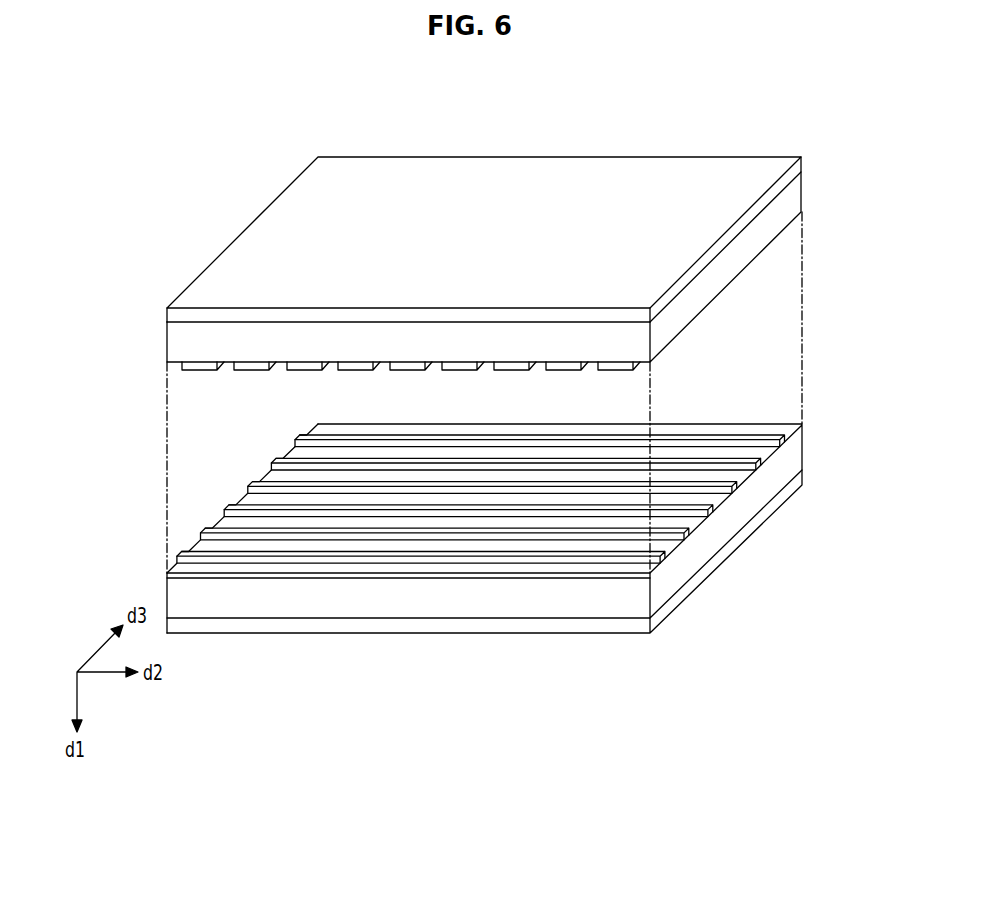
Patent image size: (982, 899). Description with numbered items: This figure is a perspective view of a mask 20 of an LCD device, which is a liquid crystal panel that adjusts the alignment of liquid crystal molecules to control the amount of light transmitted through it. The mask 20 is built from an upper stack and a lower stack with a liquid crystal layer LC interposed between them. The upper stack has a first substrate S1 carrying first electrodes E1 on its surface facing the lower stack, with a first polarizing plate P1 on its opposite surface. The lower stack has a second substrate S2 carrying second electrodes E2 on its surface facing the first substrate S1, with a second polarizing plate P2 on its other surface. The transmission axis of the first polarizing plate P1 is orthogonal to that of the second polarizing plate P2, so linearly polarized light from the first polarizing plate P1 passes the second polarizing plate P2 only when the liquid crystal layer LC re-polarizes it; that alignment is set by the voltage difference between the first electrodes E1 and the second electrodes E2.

The mask 20 is at (474, 131).
The first polarizing plate P1 is at (802, 167).
The first substrate S1 is at (802, 199).
The first electrodes E1 is at (620, 366).
The liquid crystal layer LC is at (792, 358).
The second electrodes E2 is at (795, 431).
The second substrate S2 is at (802, 452).
The second polarizing plate P2 is at (802, 478).